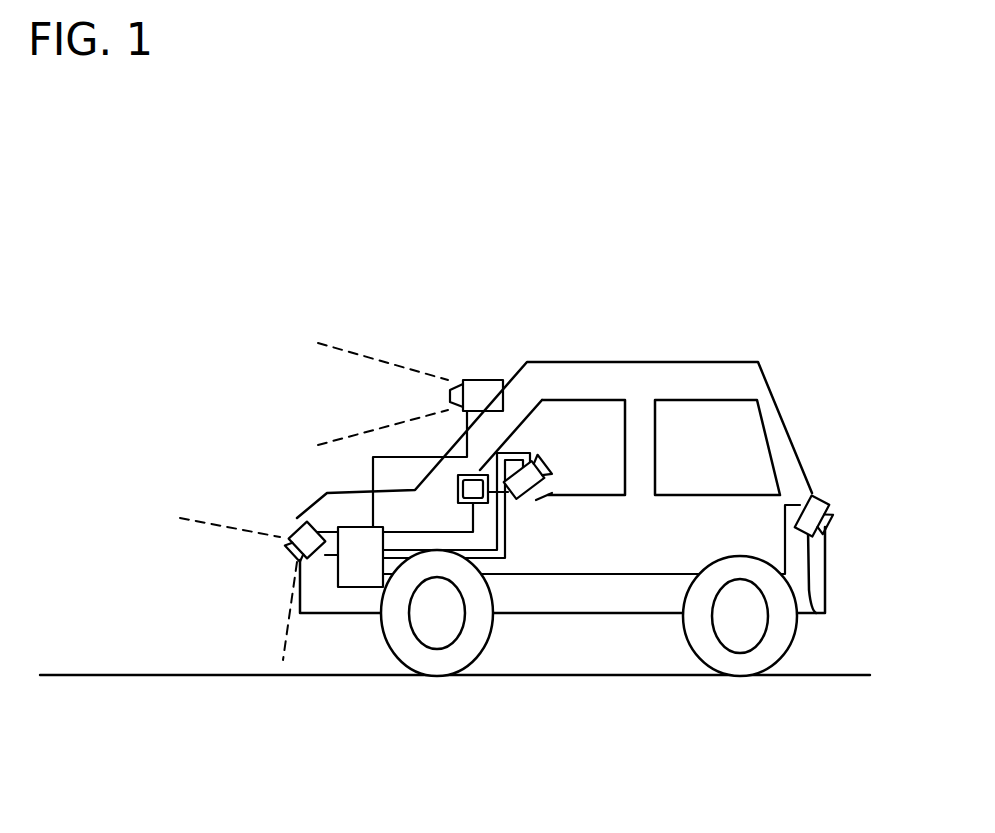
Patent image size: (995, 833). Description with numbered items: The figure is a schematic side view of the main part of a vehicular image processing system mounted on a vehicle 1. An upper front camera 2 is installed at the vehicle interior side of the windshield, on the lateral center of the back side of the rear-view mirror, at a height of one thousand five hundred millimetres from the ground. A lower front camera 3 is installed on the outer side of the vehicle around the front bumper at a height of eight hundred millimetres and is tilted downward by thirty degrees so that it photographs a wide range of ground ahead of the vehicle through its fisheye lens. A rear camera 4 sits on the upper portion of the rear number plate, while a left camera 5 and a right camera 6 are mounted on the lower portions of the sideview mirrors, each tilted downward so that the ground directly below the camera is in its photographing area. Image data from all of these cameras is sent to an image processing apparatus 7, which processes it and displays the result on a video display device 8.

The vehicle 1 is at (714, 362).
The upper front camera 2 is at (479, 380).
The lower front camera 3 is at (297, 518).
The rear camera 4 is at (823, 613).
The left camera 5 is at (538, 503).
The right camera 6 is at (552, 495).
The image processing apparatus 7 is at (362, 587).
The video display device 8 is at (473, 475).